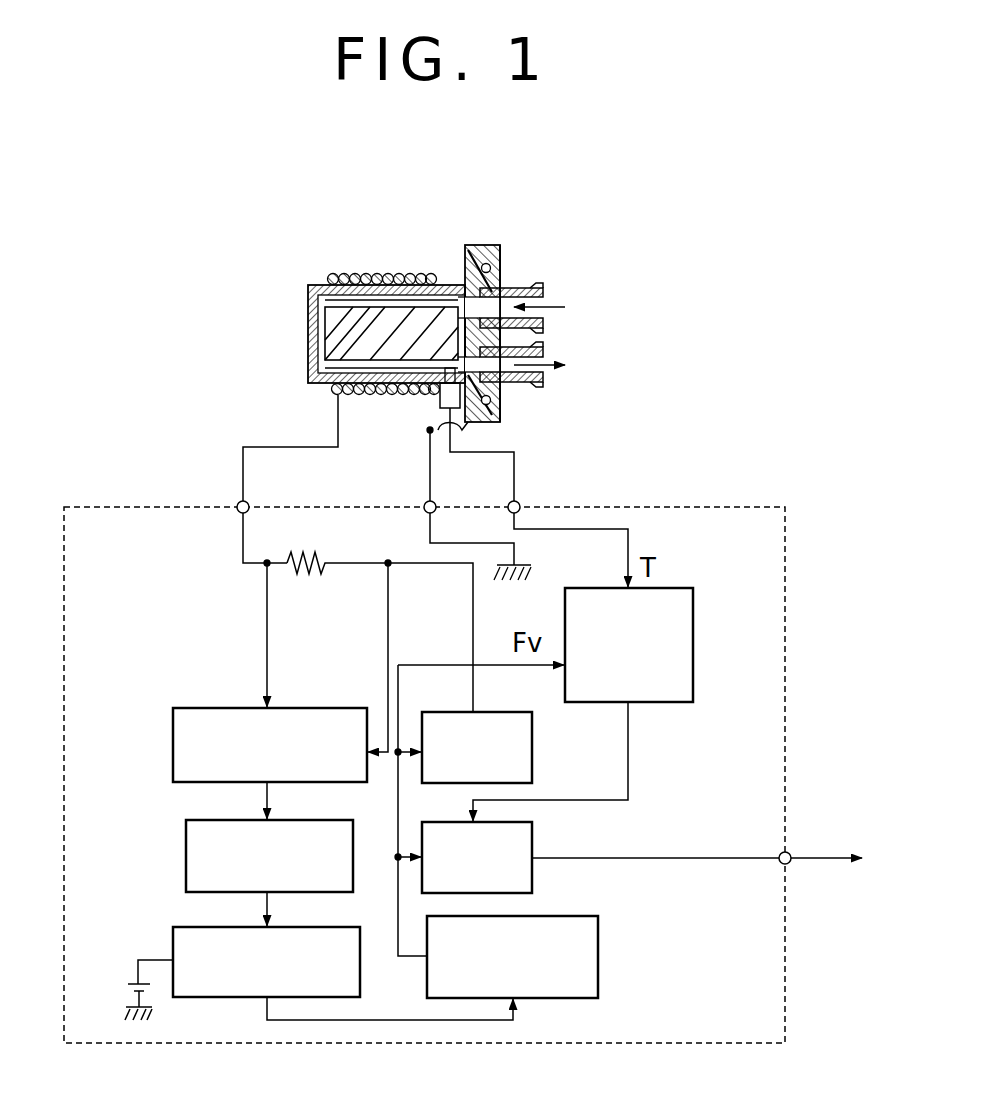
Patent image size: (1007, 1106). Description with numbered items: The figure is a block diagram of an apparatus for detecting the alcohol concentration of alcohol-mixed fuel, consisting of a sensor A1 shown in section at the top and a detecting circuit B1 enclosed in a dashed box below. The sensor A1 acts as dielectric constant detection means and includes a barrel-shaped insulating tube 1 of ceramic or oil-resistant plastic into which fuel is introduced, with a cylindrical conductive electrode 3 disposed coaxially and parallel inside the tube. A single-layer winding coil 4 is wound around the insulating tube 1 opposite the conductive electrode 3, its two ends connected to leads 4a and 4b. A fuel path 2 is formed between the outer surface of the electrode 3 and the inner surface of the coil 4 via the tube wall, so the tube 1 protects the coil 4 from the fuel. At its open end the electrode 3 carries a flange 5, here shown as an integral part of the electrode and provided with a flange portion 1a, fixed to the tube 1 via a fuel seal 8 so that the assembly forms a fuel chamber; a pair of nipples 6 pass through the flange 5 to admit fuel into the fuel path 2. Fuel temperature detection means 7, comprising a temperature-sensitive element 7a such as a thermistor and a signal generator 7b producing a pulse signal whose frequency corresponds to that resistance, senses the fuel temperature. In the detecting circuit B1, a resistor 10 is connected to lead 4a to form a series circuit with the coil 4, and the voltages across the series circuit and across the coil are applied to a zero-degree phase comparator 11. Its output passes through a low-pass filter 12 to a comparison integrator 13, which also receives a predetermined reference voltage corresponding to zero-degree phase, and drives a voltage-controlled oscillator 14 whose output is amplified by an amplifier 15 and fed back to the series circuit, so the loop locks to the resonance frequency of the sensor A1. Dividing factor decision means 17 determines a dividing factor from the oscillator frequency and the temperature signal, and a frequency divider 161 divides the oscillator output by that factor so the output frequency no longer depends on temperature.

The sensor A1 is at (290, 338).
The barrel-shaped insulating tube 1 is at (466, 300).
The flange of housing 1a is at (478, 245).
The fuel path 2 is at (318, 286).
The conductive electrode 3 is at (372, 318).
The single-layer winding coil 4 is at (418, 275).
The lead 4a is at (322, 450).
The lead 4b is at (432, 455).
The flange 5 is at (502, 262).
The nipples 6 is at (544, 290).
The fuel temperature detection means 7 is at (475, 435).
The temperature-sensitive element 7a is at (420, 383).
The signal generator 7b is at (500, 383).
The fuel seal 8 is at (487, 263).
The detecting circuit B1 is at (628, 507).
The resistor 10 is at (325, 555).
The zero-degree phase comparator 11 is at (173, 738).
The low-pass filter 12 is at (186, 848).
The comparison integrator 13 is at (196, 927).
The voltage-controlled oscillator 14 is at (598, 978).
The amplifier 15 is at (532, 740).
The frequency divider 161 is at (532, 876).
The dividing factor decision means 17 is at (693, 658).